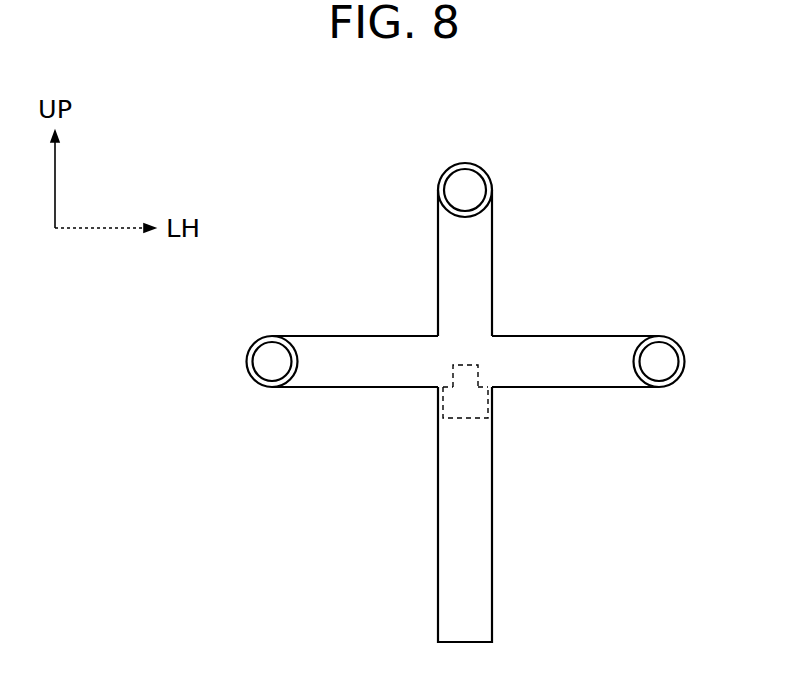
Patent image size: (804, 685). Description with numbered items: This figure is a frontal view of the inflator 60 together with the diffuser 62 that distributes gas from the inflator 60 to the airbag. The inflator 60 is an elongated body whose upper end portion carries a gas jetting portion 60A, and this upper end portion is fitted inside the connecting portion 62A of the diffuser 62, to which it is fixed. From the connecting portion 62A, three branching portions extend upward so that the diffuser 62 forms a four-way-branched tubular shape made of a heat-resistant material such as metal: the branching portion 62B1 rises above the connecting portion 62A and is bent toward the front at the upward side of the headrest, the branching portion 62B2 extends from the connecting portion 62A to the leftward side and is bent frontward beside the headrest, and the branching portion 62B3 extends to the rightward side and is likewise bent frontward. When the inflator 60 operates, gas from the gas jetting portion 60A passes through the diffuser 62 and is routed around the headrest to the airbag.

The inflator 60 is at (463, 503).
The gas jetting portion 60A is at (436, 408).
The diffuser 62 is at (466, 228).
The connecting portion 62A is at (491, 408).
The branching portion 62B1 is at (465, 163).
The branching portion 62B2 is at (630, 313).
The branching portion 62B3 is at (330, 336).